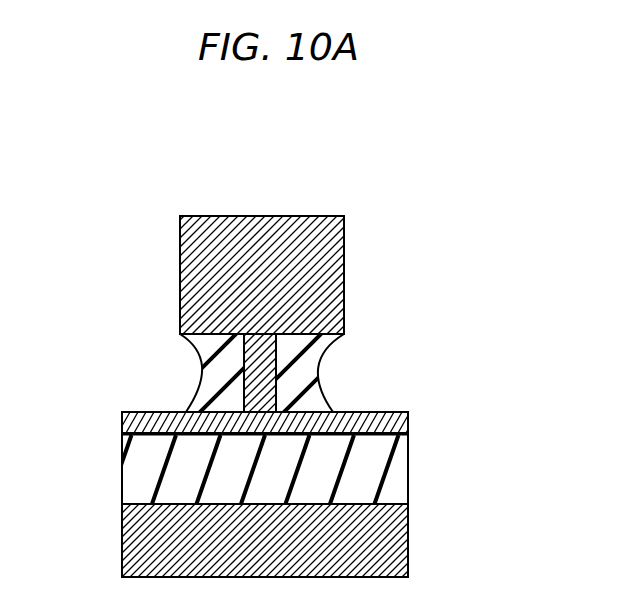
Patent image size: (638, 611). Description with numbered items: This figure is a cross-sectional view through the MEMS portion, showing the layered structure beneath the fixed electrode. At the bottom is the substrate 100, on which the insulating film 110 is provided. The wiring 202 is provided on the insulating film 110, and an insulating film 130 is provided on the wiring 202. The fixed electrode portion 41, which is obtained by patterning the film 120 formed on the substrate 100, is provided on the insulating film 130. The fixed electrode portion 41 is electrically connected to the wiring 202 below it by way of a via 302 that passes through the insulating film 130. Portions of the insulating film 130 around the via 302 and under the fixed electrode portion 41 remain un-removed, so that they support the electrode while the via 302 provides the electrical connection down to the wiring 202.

The fixed electrode portion 41 is at (285, 265).
The film 120 is at (352, 214).
The via 302 is at (258, 363).
The insulating film 130 is at (303, 367).
The wiring 202 is at (395, 420).
The insulating film 110 is at (390, 474).
The substrate 100 is at (392, 543).